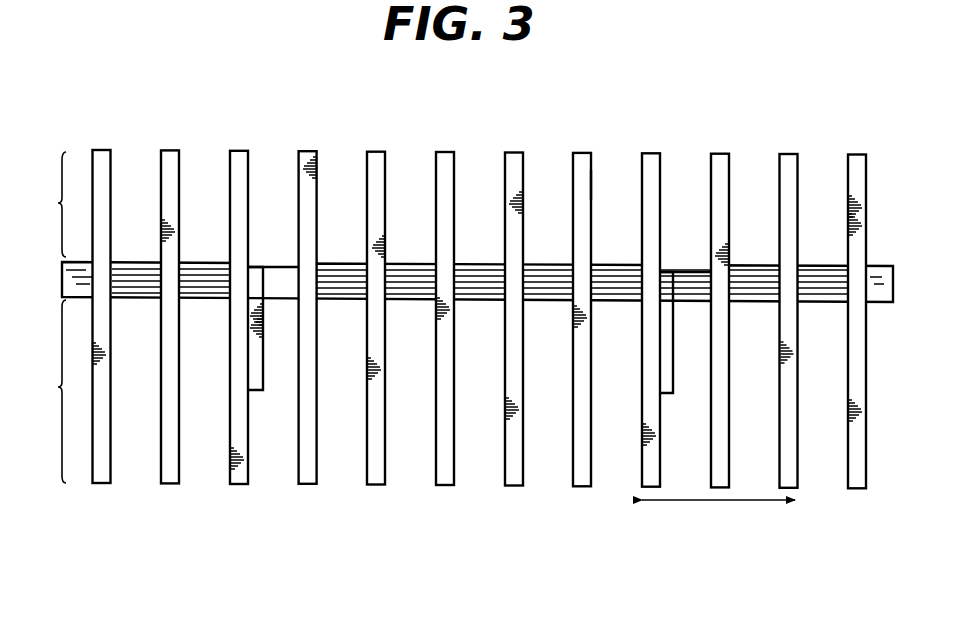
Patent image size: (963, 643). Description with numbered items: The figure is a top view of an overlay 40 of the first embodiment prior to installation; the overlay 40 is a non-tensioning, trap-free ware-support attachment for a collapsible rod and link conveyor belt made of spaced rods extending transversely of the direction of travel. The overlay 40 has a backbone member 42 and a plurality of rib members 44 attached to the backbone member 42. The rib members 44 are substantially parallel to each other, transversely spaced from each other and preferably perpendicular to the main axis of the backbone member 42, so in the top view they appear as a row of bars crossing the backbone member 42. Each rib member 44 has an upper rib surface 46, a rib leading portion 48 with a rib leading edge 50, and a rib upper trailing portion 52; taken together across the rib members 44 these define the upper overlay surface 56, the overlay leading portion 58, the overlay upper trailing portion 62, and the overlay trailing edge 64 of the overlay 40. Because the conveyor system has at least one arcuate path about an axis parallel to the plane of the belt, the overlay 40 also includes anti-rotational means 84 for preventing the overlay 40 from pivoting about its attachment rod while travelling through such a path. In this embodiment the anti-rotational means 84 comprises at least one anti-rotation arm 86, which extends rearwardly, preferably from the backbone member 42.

The overlay 40 is at (705, 88).
The backbone member 42 is at (137, 279).
The rib members 44 is at (572, 150).
The upper rib surface 46 is at (855, 333).
The rib leading portion 48 is at (649, 171).
The rib leading edge 50 is at (245, 151).
The rib upper trailing portion 52 is at (506, 455).
The upper overlay surface 56 is at (856, 234).
The overlay leading portion 58 is at (52, 204).
The overlay upper trailing portion 62 is at (50, 391).
The overlay trailing edge 64 is at (718, 516).
The anti-rotational means 84 is at (262, 346).
The anti-rotation arm 86 is at (255, 391).